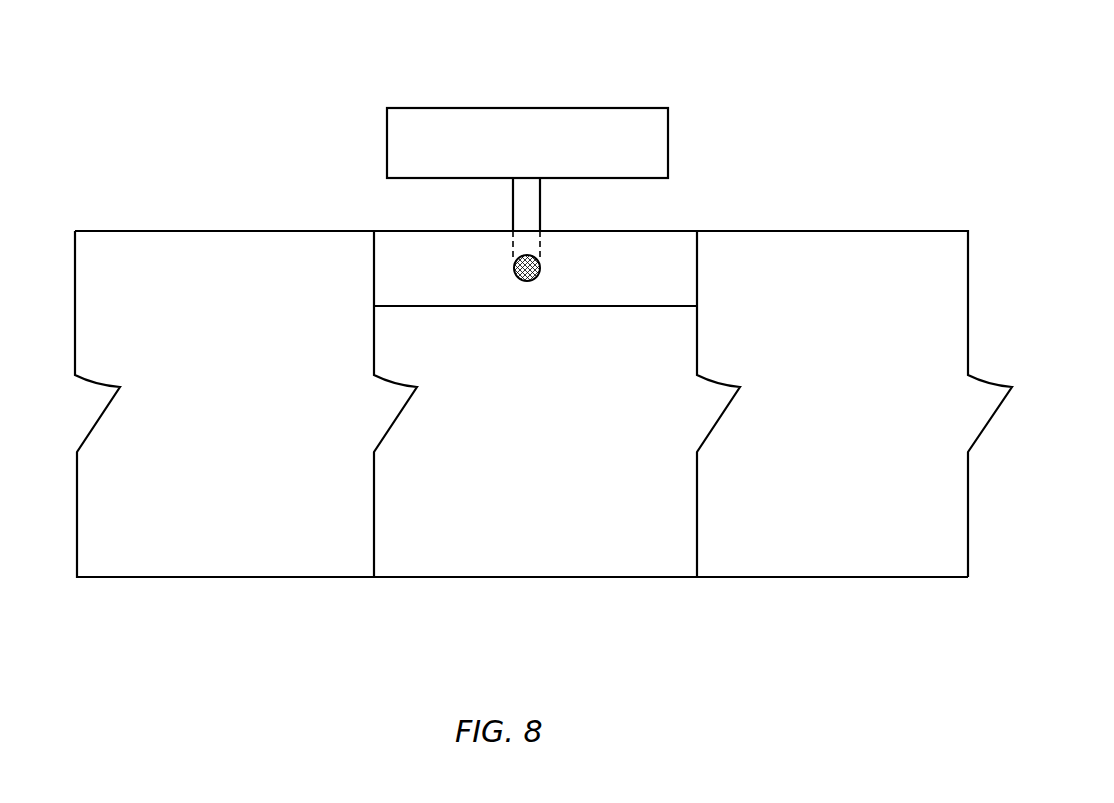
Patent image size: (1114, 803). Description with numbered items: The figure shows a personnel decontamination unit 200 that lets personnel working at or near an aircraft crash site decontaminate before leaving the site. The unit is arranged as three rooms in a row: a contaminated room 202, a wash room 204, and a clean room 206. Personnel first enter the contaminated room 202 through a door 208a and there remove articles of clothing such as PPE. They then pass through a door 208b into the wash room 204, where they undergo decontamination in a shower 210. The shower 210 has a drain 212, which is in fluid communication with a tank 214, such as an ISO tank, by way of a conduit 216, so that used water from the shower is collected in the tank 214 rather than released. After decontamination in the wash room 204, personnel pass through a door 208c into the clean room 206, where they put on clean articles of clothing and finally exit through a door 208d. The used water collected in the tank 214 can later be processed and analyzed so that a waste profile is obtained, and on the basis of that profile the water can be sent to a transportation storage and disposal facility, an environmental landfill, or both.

The personnel decontamination unit 200 is at (953, 105).
The contaminated room 202 is at (303, 577).
The wash room 204 is at (562, 577).
The clean room 206 is at (845, 577).
The door 208a is at (107, 410).
The door 208b is at (397, 422).
The door 208c is at (720, 423).
The door 208d is at (993, 415).
The shower 210 is at (658, 247).
The drain 212 is at (540, 275).
The tank 214 is at (635, 108).
The conduit 216 is at (513, 205).